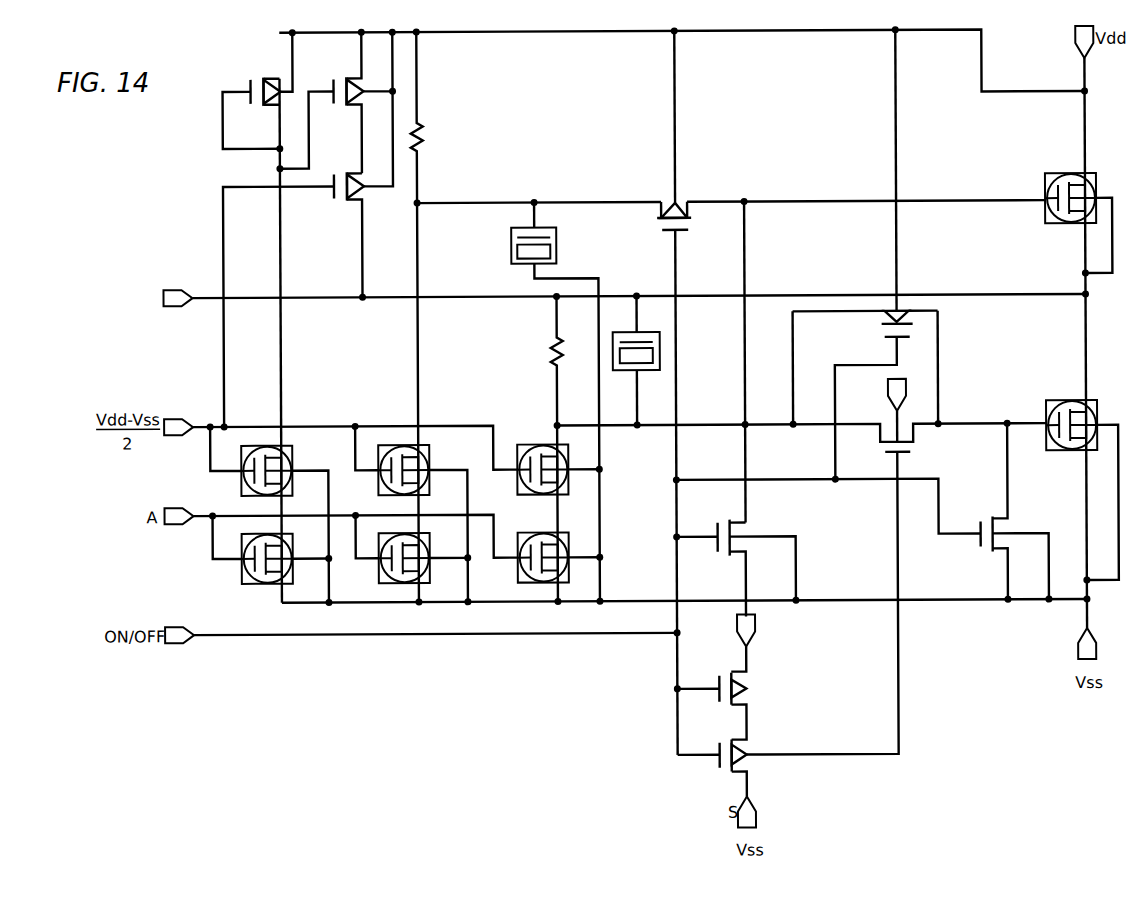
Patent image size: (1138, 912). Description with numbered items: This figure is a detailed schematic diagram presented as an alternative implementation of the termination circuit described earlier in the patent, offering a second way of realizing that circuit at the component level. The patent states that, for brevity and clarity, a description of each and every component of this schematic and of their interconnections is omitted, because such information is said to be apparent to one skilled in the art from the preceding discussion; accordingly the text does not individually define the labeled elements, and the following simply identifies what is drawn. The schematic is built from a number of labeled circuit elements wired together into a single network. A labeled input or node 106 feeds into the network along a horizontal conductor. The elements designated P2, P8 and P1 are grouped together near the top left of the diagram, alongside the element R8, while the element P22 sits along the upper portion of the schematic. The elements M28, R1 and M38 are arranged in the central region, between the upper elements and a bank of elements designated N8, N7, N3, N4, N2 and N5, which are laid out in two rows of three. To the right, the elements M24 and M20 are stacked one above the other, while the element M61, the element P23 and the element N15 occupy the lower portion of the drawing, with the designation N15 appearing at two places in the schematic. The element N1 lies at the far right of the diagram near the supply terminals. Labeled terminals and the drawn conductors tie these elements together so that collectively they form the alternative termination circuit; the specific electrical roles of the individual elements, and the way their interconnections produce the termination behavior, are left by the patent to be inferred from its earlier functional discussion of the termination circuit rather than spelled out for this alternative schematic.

The control input line 106 is at (164, 295).
The PMOS transistor P2 is at (257, 91).
The PMOS transistor P8 is at (336, 103).
The PMOS transistor P1 is at (309, 259).
The resistor R8 is at (430, 317).
The PMOS transistor P22 is at (665, 393).
The transistor element M28 is at (538, 402).
The resistor R1 is at (545, 448).
The transistor element M38 is at (646, 360).
The NMOS transistor N8 is at (269, 515).
The NMOS transistor N7 is at (271, 550).
The NMOS transistor N3 is at (411, 514).
The NMOS transistor N4 is at (412, 549).
The NMOS transistor N2 is at (818, 331).
The NMOS transistor N5 is at (559, 552).
The NMOS transistor M61 is at (736, 564).
The PMOS transistor P23 is at (711, 693).
The NMOS transistor N15 is at (863, 610).
The PMOS transistor M24 is at (864, 255).
The NMOS transistor M20 is at (879, 422).
The NMOS transistor N1 is at (1084, 484).